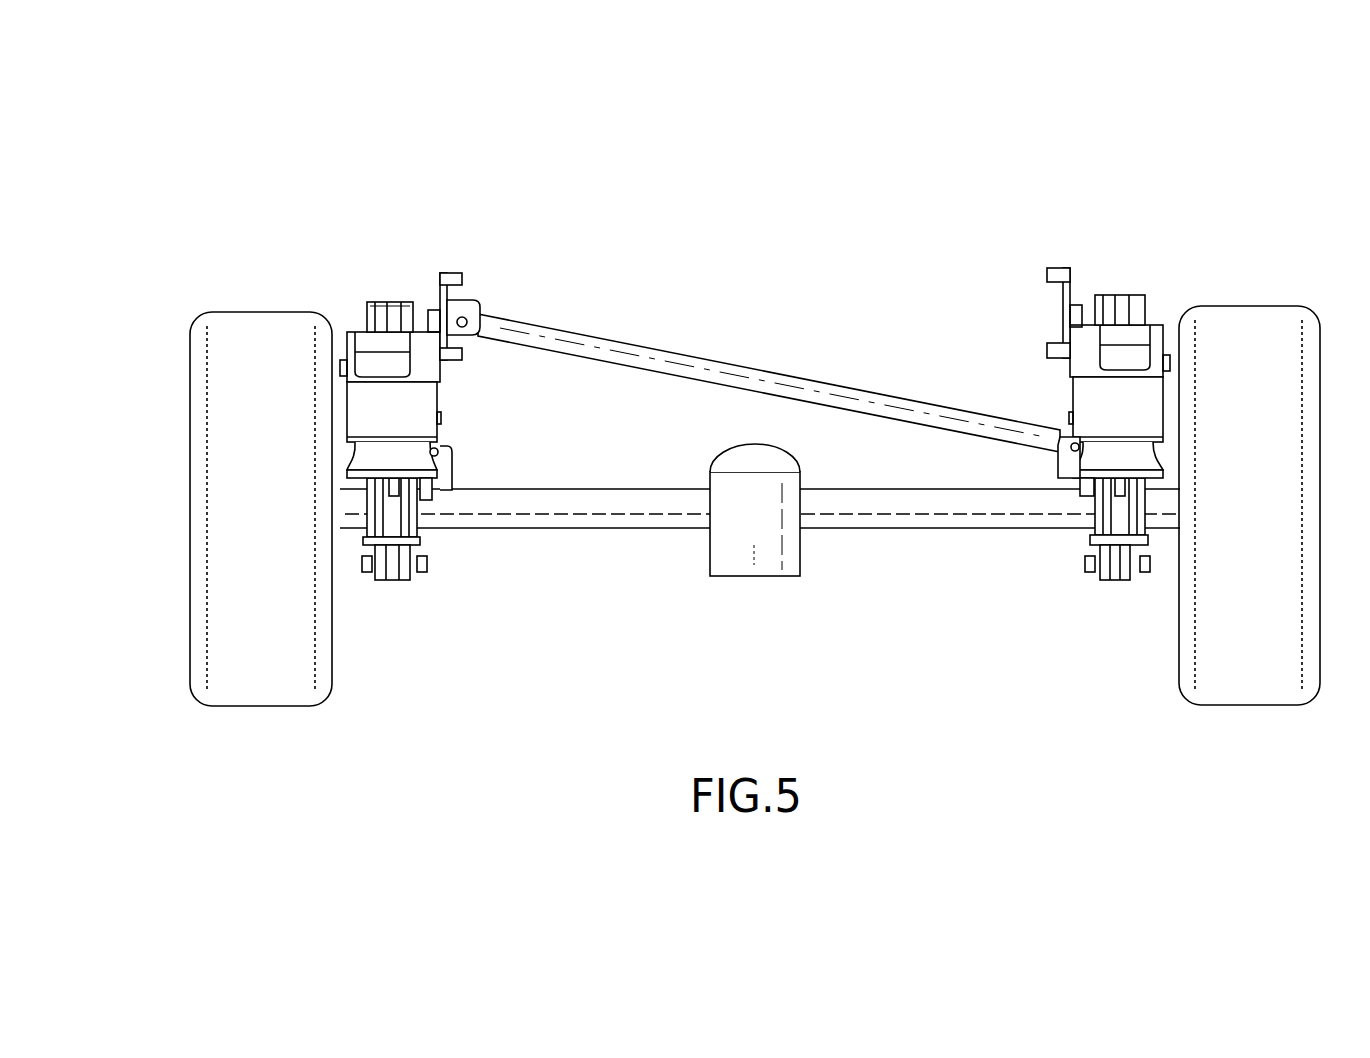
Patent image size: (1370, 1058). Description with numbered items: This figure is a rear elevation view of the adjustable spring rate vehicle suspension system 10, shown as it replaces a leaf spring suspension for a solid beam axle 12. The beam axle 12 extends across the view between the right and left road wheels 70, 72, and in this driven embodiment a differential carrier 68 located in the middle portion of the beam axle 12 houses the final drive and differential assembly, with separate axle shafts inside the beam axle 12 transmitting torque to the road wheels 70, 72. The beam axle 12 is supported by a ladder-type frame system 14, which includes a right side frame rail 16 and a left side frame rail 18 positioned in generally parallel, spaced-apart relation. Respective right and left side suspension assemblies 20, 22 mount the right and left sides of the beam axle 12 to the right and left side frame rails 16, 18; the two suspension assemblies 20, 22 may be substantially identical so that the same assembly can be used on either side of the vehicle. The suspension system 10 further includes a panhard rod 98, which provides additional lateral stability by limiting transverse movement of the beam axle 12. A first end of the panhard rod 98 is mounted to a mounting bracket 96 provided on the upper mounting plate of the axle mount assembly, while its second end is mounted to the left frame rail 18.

The adjustable spring rate vehicle suspension system 10 is at (225, 112).
The beam axle 12 is at (888, 535).
The frame system 14 is at (1030, 283).
The right side frame rail 16 is at (1058, 266).
The left side frame rail 18 is at (460, 272).
The right side suspension assembly 20 is at (1080, 586).
The left side suspension assembly 22 is at (440, 590).
The differential carrier 68 is at (735, 577).
The right road wheel 70 is at (1268, 306).
The left road wheel 72 is at (230, 312).
The mounting bracket 96 is at (1058, 472).
The panhard rod 98 is at (714, 365).